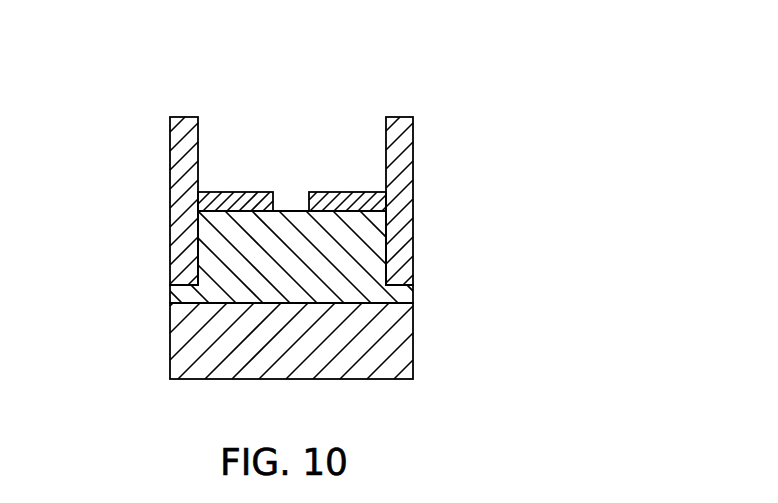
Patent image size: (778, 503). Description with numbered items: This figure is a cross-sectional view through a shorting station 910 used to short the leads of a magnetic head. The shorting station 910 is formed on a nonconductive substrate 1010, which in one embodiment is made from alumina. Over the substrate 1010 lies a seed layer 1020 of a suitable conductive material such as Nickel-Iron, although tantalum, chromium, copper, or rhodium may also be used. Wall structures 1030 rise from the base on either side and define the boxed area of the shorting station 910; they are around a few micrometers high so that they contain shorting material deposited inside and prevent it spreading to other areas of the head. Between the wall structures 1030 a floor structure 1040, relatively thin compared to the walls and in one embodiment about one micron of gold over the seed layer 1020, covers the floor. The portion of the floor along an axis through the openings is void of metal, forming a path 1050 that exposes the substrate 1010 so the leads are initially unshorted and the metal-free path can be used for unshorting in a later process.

The shorting station 910 is at (530, 203).
The nonconductive substrate 1010 is at (392, 362).
The seed layer 1020 is at (401, 297).
The wall structures 1030 is at (170, 135).
The floor structure 1040 is at (238, 193).
The path 1050 is at (290, 210).